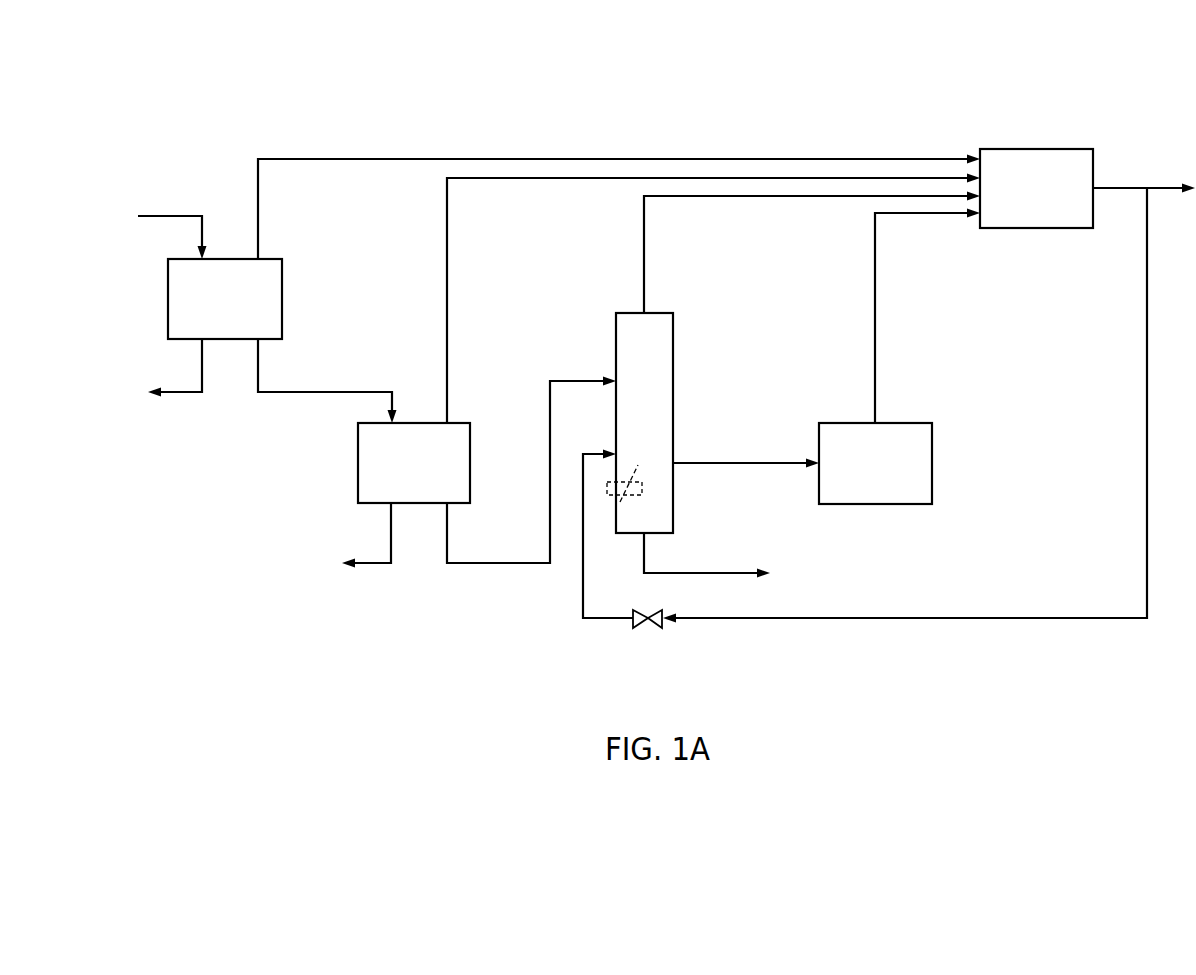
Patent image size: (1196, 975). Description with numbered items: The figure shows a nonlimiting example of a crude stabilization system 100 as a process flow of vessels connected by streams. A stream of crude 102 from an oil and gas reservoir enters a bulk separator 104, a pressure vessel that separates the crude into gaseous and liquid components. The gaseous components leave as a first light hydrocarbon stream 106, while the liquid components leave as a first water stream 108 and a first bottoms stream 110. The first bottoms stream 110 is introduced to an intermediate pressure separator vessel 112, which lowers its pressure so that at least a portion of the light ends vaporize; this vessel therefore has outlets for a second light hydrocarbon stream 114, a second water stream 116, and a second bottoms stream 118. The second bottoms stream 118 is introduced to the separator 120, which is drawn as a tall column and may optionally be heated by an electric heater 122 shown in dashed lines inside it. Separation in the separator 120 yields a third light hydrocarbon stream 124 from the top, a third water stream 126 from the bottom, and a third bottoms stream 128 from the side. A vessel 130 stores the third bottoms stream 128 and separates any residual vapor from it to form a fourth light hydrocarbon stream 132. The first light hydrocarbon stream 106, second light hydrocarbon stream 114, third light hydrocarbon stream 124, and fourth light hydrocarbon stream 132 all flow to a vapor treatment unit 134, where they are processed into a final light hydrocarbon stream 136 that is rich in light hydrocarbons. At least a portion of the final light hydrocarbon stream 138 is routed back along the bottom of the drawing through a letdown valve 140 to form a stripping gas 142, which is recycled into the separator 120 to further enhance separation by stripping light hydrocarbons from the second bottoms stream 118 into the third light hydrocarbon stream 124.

The crude stabilization system 100 is at (236, 116).
The stream of crude 102 is at (170, 216).
The bulk separator 104 is at (282, 298).
The first light hydrocarbon stream 106 is at (258, 211).
The first water stream 108 is at (183, 393).
The first bottoms stream 110 is at (258, 362).
The intermediate pressure separator vessel 112 is at (358, 465).
The second light hydrocarbon stream 114 is at (447, 338).
The second water stream 116 is at (375, 565).
The second bottoms stream 118 is at (447, 527).
The separator 120 is at (673, 347).
The electric heater 122 is at (642, 492).
The third light hydrocarbon stream 124 is at (644, 253).
The third water stream 126 is at (738, 573).
The third bottoms stream 128 is at (746, 463).
The vessel 130 is at (932, 463).
The fourth light hydrocarbon stream 132 is at (875, 312).
The vapor treatment unit 134 is at (1035, 149).
The final light hydrocarbon stream 136 is at (1128, 188).
The final light hydrocarbon stream 138 is at (973, 618).
The letdown valve 140 is at (648, 622).
The stripping gas 142 is at (583, 603).